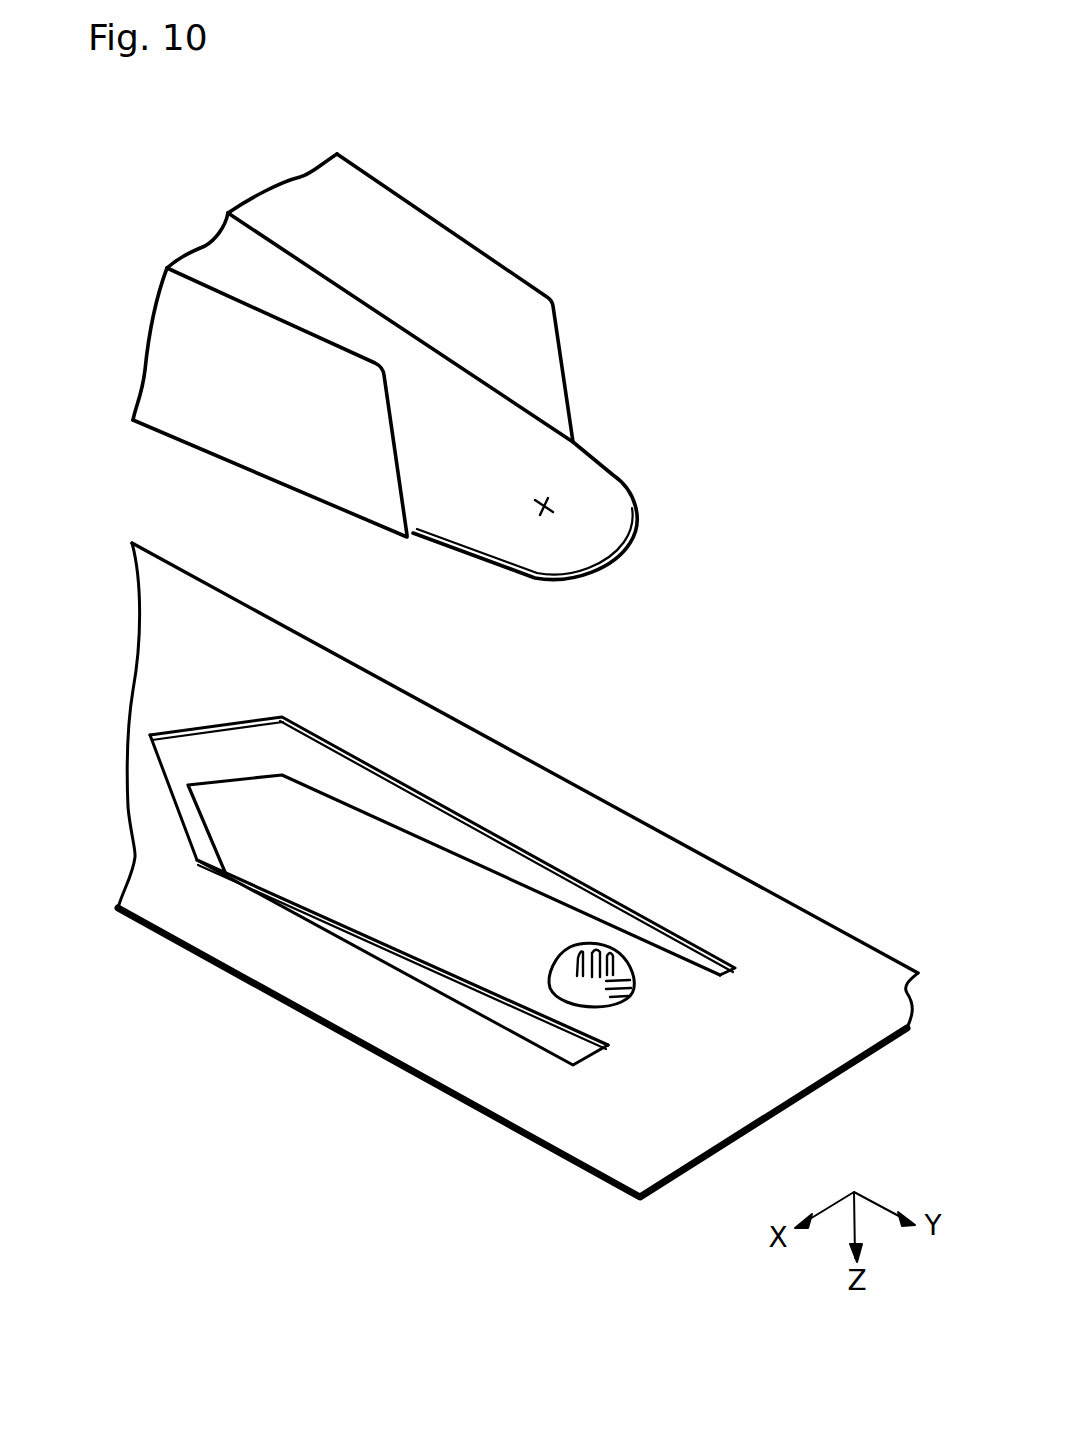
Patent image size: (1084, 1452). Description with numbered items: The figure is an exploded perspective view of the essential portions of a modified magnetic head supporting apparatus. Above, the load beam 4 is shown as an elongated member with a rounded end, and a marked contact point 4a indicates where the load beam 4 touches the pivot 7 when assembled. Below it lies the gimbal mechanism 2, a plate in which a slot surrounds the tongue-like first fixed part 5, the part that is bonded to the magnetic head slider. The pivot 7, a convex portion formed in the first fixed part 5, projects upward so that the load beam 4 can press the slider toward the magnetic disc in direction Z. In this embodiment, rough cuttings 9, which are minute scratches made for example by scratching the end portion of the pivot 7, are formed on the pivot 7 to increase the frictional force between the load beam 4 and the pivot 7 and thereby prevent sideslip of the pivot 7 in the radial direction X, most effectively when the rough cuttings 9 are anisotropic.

The load beam 4 is at (623, 497).
The contact point 4a is at (543, 516).
The gimbal mechanism 2 is at (680, 855).
The first fixed part 5 is at (352, 897).
The pivot 7 is at (627, 998).
The rough cuttings 9 is at (563, 950).